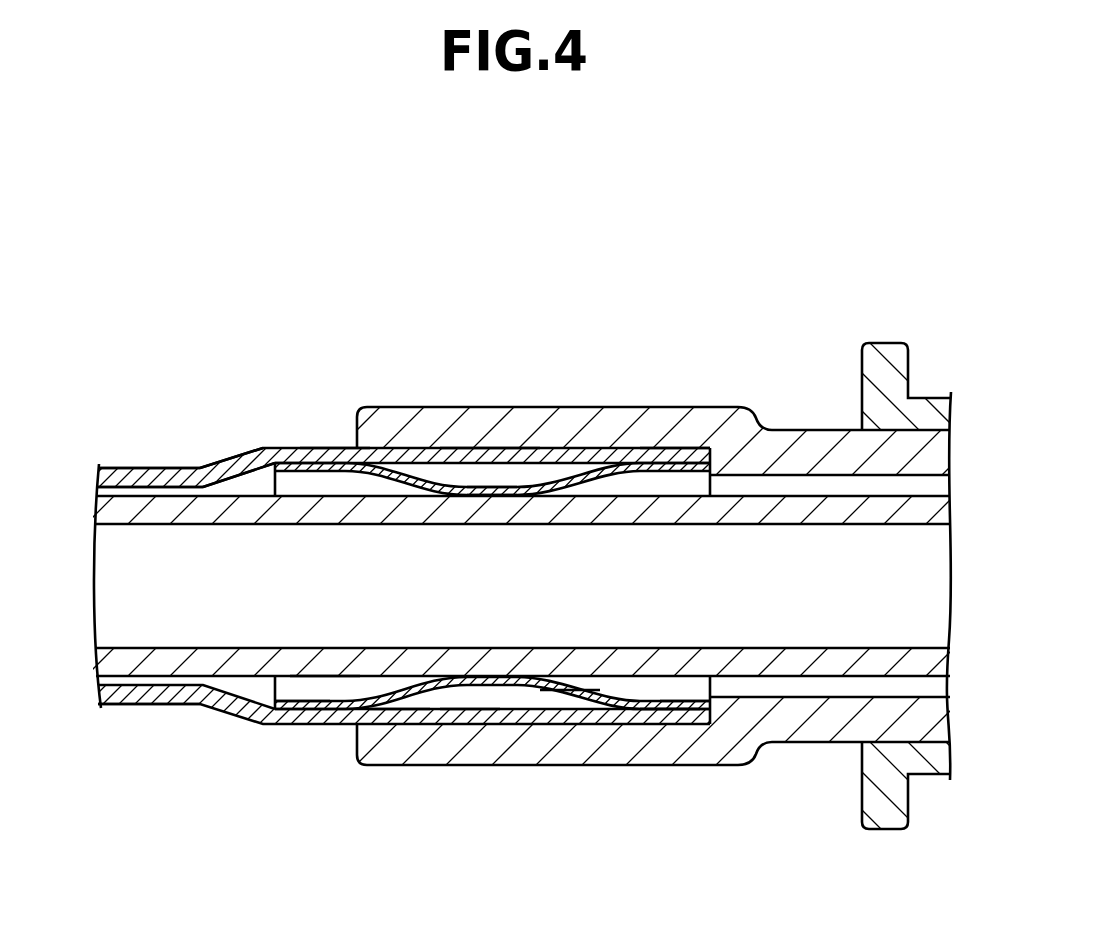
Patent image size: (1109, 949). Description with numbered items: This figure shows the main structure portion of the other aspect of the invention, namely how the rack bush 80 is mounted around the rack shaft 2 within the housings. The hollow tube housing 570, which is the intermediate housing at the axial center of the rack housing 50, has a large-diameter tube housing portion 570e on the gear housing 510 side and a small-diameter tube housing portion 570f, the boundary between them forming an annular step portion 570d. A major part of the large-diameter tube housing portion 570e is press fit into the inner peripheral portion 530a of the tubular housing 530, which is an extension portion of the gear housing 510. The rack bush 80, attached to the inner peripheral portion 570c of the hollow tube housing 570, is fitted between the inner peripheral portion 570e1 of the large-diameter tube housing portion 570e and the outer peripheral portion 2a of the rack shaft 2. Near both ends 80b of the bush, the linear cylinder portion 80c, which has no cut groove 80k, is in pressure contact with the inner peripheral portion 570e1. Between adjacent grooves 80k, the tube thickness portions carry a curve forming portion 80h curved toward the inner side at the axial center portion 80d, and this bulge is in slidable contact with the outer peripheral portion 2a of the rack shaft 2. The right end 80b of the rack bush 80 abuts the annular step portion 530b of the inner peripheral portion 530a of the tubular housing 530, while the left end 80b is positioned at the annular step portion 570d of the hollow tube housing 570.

The rack shaft 2 is at (310, 656).
The outer peripheral portion of rack shaft 2a is at (321, 677).
The rack housing 50 is at (143, 725).
The rack bush 80 is at (597, 717).
The end of rack bush 80b is at (270, 685).
The linear cylinder portion 80c is at (671, 707).
The center portion of rack bush 80d is at (478, 481).
The curve forming portion 80h is at (513, 497).
The groove 80k is at (557, 700).
The gear housing 510 is at (809, 385).
The tubular housing 530 is at (576, 395).
The inner peripheral portion of tubular housing 530a is at (488, 453).
The annular step portion 530b is at (682, 455).
The hollow tube housing 570 is at (277, 436).
The inner peripheral portion of hollow tube housing 570c is at (477, 712).
The annular step portion 570d is at (241, 457).
The large-diameter tube housing portion 570e is at (333, 436).
The inner peripheral portion of large-diameter tube housing portion 570e1 is at (407, 710).
The small-diameter tube housing portion 570f is at (143, 452).